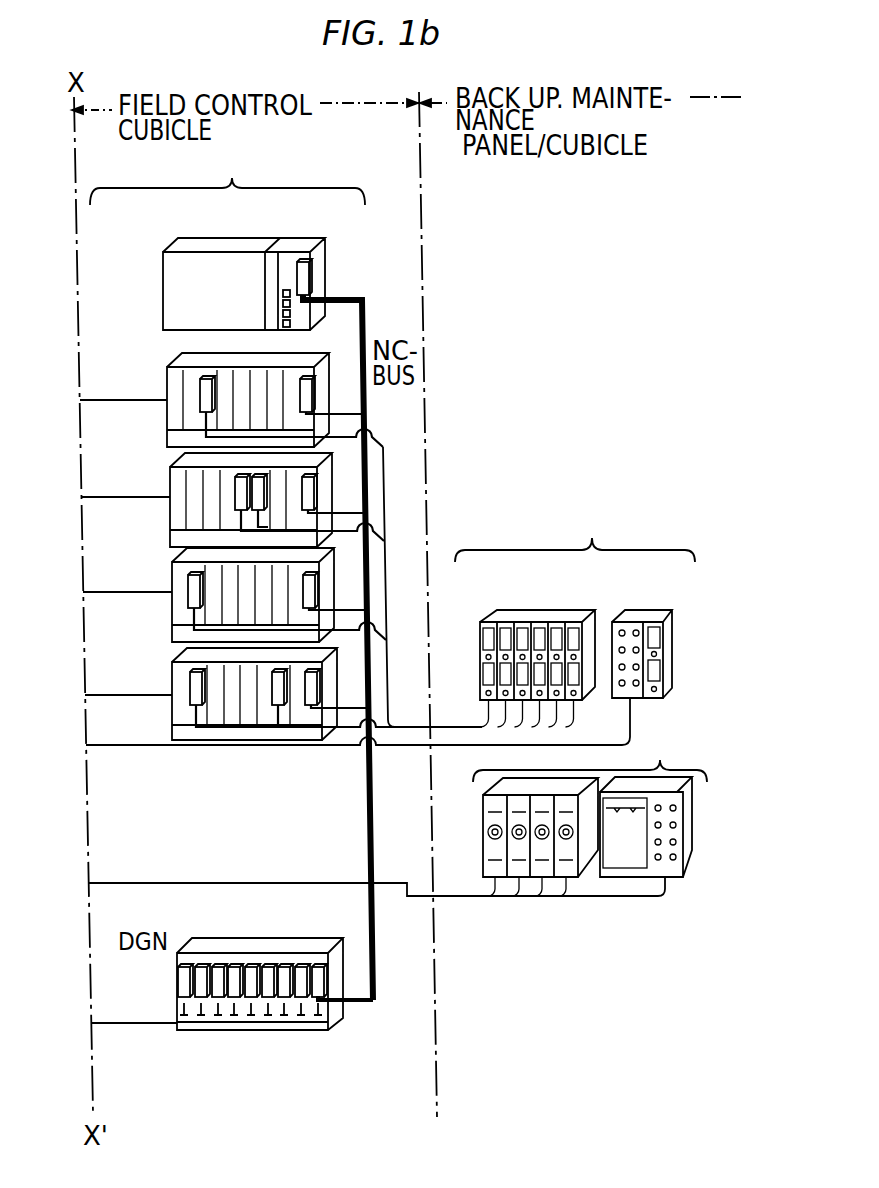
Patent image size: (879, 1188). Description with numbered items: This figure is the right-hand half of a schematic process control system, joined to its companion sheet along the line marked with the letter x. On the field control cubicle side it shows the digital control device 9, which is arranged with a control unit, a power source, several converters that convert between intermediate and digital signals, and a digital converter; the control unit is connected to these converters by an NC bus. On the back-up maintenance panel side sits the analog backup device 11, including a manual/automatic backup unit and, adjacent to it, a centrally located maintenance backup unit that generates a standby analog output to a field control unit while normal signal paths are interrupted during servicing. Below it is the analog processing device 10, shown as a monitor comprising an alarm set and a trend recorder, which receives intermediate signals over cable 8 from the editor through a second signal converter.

The cable 8 is at (289, 883).
The digital control device 9 is at (232, 179).
The analog processing device 10 is at (660, 761).
The analog backup device 11 is at (592, 538).